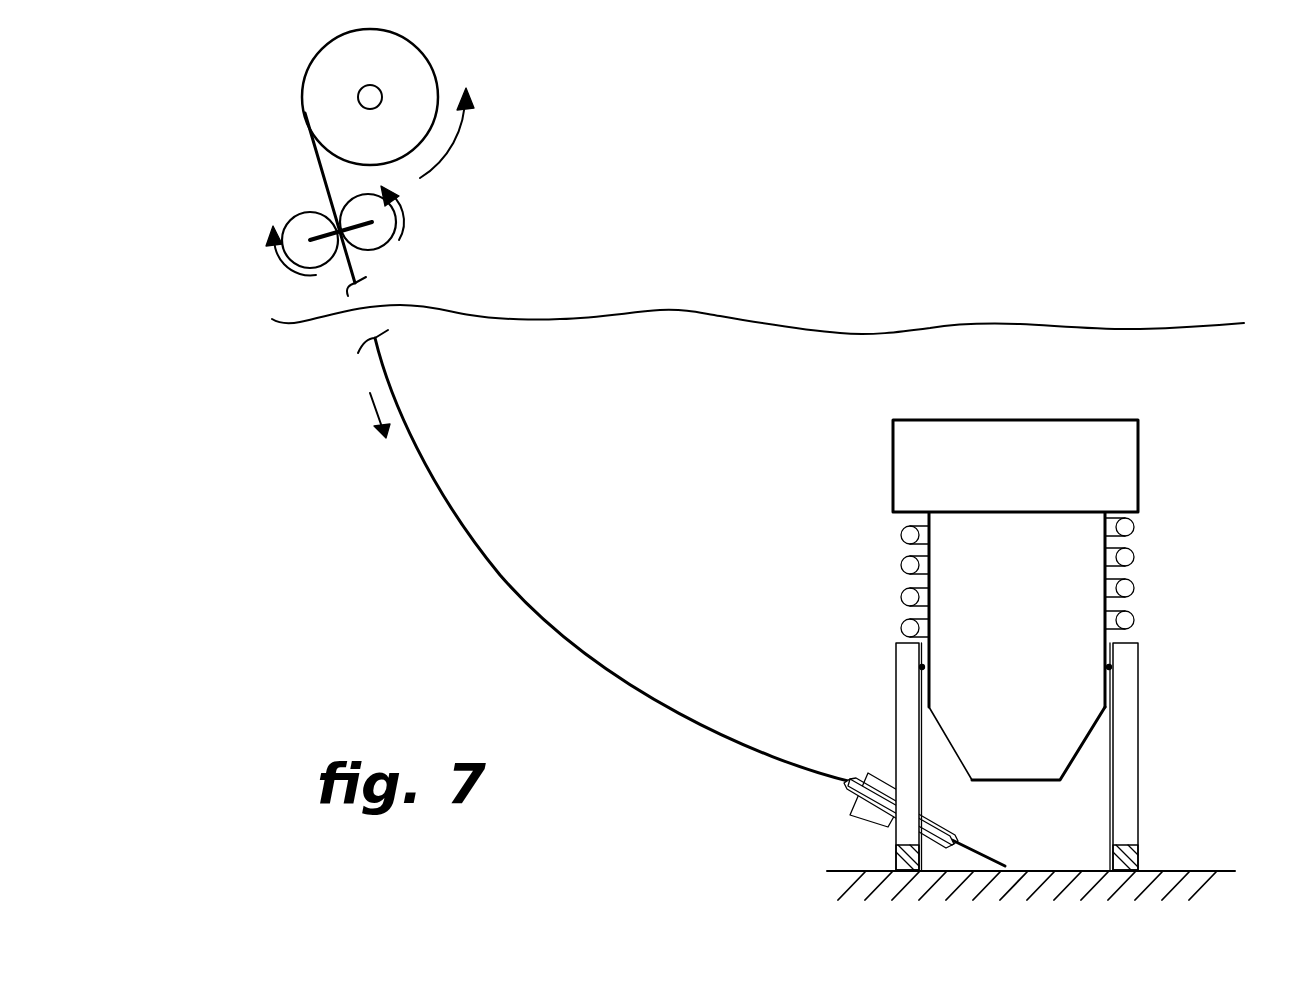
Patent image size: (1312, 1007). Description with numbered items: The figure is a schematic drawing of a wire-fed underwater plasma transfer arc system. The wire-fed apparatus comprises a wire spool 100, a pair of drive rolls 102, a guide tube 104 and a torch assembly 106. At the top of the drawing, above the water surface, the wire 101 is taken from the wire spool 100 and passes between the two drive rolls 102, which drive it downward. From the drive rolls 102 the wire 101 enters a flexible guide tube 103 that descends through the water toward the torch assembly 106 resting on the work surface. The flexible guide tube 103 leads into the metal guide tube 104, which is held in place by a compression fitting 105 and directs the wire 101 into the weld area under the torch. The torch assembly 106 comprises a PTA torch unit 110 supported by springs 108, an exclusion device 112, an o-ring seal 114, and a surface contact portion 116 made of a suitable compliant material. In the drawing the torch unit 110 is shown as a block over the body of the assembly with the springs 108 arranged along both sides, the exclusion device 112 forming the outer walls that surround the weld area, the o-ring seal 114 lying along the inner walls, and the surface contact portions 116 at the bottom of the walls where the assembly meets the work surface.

The wire spool 100 is at (437, 67).
The wire 101 is at (315, 153).
The drive rolls 102 is at (300, 272).
The flexible guide tube 103 is at (457, 518).
The guide tube 104 is at (850, 780).
The compression fitting 105 is at (862, 813).
The torch assembly 106 is at (1094, 615).
The spring 108 is at (1137, 585).
The PTA torch unit 110 is at (1063, 420).
The exclusion device 112 is at (1138, 784).
The o-ring seal 114 is at (1113, 678).
The surface contact portion 116 is at (897, 853).